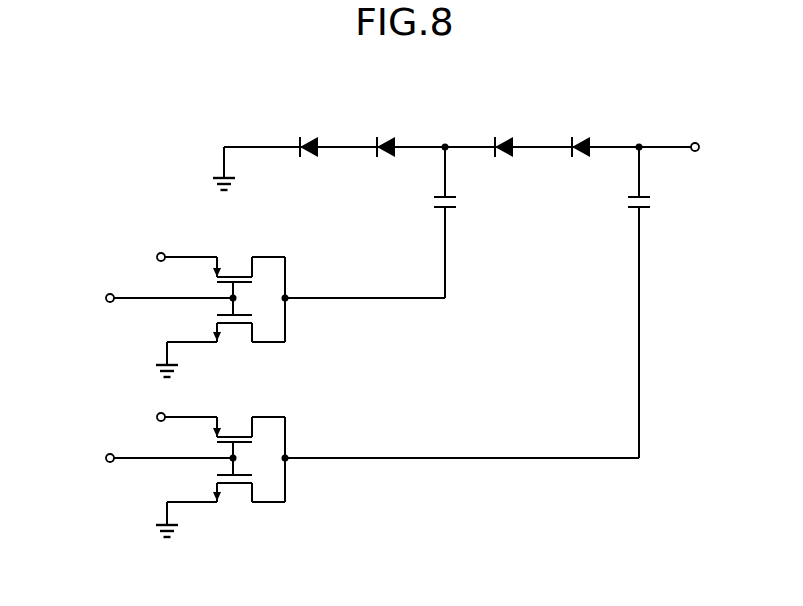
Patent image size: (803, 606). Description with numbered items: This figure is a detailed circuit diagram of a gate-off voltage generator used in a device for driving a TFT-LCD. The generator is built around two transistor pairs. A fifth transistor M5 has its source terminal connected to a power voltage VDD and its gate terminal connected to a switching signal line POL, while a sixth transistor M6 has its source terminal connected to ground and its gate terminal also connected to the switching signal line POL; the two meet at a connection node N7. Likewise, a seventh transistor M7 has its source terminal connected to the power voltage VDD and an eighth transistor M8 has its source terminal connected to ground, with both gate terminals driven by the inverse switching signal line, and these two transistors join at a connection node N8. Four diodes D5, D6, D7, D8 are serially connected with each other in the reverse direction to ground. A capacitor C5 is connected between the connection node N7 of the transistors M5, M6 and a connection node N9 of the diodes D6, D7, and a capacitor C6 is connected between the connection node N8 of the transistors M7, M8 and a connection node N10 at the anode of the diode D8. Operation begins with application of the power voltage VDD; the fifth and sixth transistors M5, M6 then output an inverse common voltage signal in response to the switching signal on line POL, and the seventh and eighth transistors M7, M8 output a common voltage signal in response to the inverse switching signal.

The diode D5 is at (309, 132).
The diode D6 is at (385, 132).
The diode D7 is at (504, 132).
The diode D8 is at (580, 132).
The connection node N9 is at (446, 133).
The connection node N10 is at (639, 133).
The capacitor C5 is at (425, 222).
The capacitor C6 is at (620, 302).
The connection node N7 is at (365, 287).
The connection node N8 is at (462, 447).
The fifth transistor M5 is at (197, 302).
The sixth transistor M6 is at (226, 346).
The seventh transistor M7 is at (197, 462).
The eighth transistor M8 is at (226, 506).
The power voltage VDD is at (126, 339).
The switching signal line POL is at (71, 300).